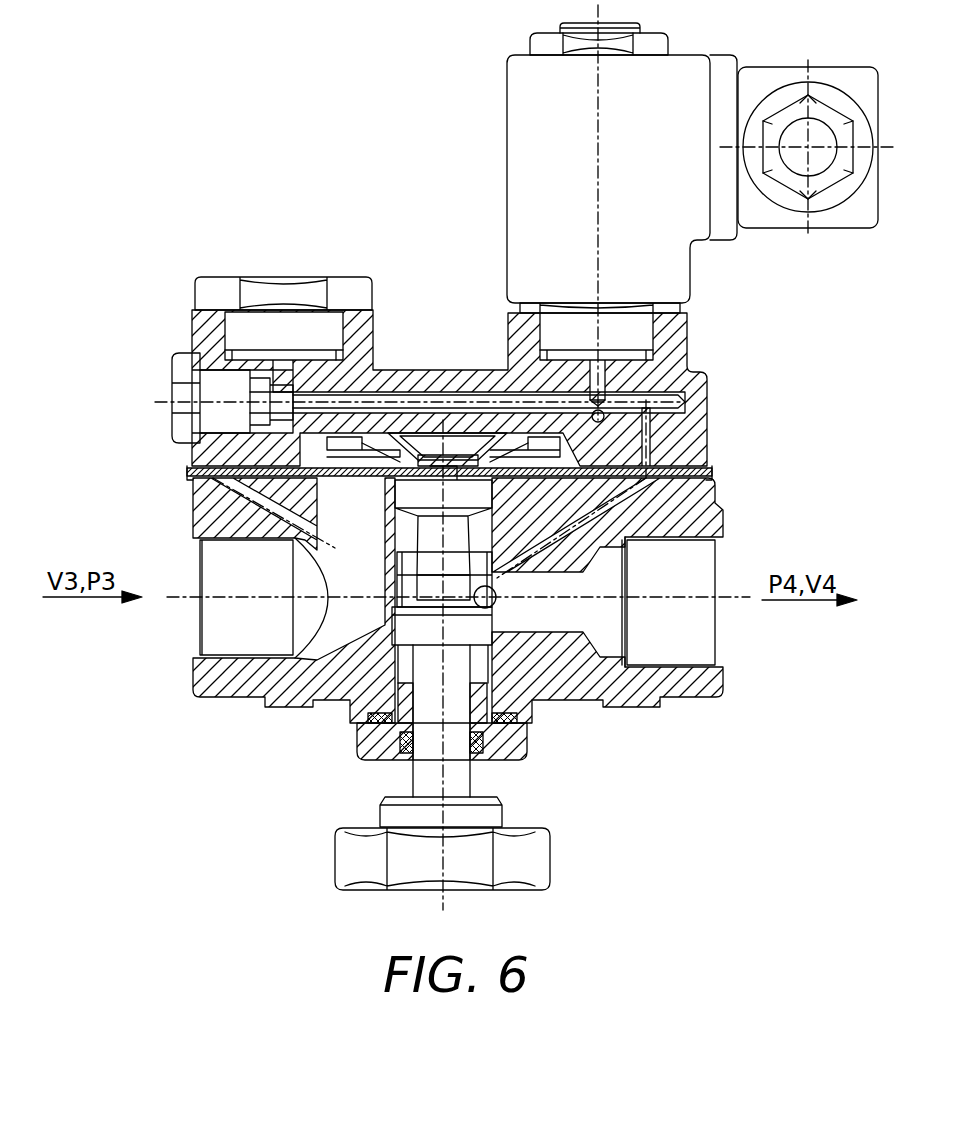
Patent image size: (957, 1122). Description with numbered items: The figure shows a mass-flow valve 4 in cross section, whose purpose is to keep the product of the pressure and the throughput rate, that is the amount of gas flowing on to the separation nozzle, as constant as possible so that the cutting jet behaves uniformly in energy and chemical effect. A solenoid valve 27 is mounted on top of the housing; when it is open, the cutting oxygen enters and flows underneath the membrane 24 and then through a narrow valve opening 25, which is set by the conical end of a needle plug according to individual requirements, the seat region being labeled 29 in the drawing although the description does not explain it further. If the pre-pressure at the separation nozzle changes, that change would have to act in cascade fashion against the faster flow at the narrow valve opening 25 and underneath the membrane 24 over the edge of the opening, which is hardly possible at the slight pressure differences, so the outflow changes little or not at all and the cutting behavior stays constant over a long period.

The mass-flow valve 4 is at (450, 383).
The membrane 24 is at (190, 460).
The valve opening 25 is at (410, 490).
The solenoid valve 27 is at (523, 88).
The valve seat bushing 29 is at (423, 563).